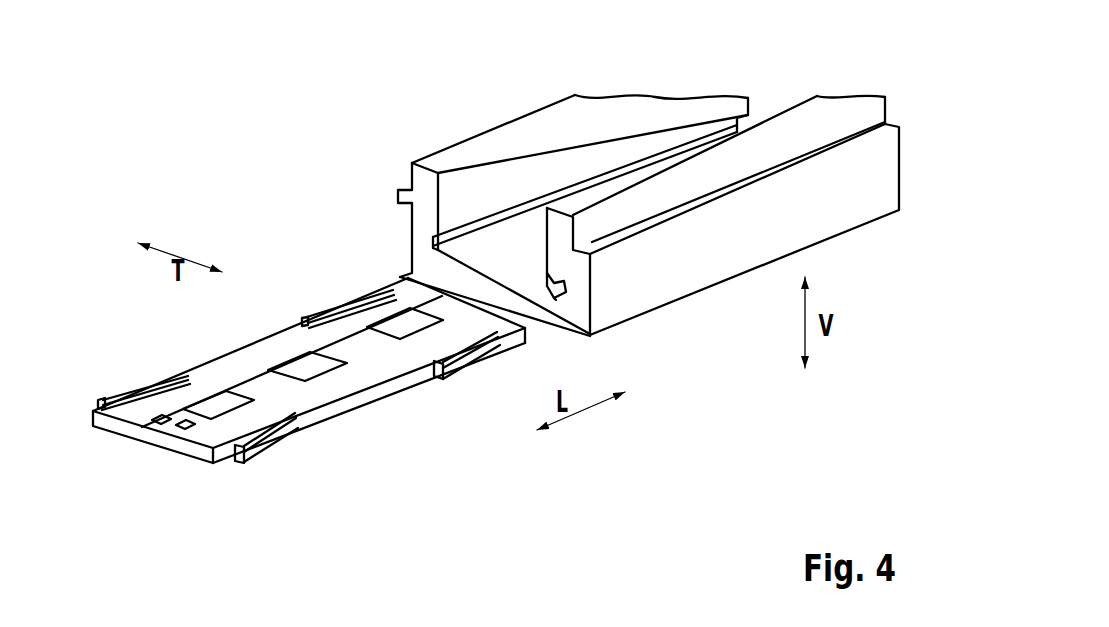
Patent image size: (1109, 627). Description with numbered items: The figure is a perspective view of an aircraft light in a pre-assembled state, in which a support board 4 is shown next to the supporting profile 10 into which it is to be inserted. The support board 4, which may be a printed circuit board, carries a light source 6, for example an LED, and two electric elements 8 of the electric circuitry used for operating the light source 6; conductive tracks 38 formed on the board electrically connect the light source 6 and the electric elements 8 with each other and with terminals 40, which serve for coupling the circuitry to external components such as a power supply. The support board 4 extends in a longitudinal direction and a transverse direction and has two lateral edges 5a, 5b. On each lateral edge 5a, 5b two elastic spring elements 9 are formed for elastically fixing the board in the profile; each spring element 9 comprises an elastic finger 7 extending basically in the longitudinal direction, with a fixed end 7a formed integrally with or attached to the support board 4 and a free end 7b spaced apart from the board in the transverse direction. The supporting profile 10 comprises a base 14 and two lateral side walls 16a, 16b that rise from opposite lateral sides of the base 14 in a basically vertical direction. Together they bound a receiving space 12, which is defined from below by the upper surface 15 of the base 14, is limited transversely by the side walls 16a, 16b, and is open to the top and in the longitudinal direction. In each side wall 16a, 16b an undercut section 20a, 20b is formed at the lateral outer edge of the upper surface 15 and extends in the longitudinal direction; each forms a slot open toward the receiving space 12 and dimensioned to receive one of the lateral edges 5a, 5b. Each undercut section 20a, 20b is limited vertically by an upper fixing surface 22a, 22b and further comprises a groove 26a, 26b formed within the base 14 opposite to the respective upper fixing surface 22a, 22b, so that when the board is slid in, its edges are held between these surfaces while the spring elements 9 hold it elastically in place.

The support board 4 is at (310, 366).
The lateral edge 5a is at (245, 332).
The lateral edge 5b is at (378, 404).
The light source 6 is at (304, 364).
The elastic finger 7 is at (310, 370).
The fixed end 7a is at (358, 300).
The free end 7b is at (303, 318).
The electric element 8 is at (405, 324).
The spring element 9 is at (310, 366).
The supporting profile 10 is at (611, 209).
The receiving space 12 is at (611, 209).
The base 14 is at (550, 318).
The upper surface 15 is at (490, 256).
The lateral side wall 16a is at (404, 201).
The lateral side wall 16b is at (615, 256).
The undercut section 20a is at (418, 242).
The undercut section 20b is at (569, 289).
The upper fixing surface 22a is at (433, 238).
The upper fixing surface 22b is at (554, 276).
The groove 26a is at (433, 269).
The groove 26b is at (564, 302).
The conductive track 38 is at (255, 380).
The terminal 40 is at (158, 428).